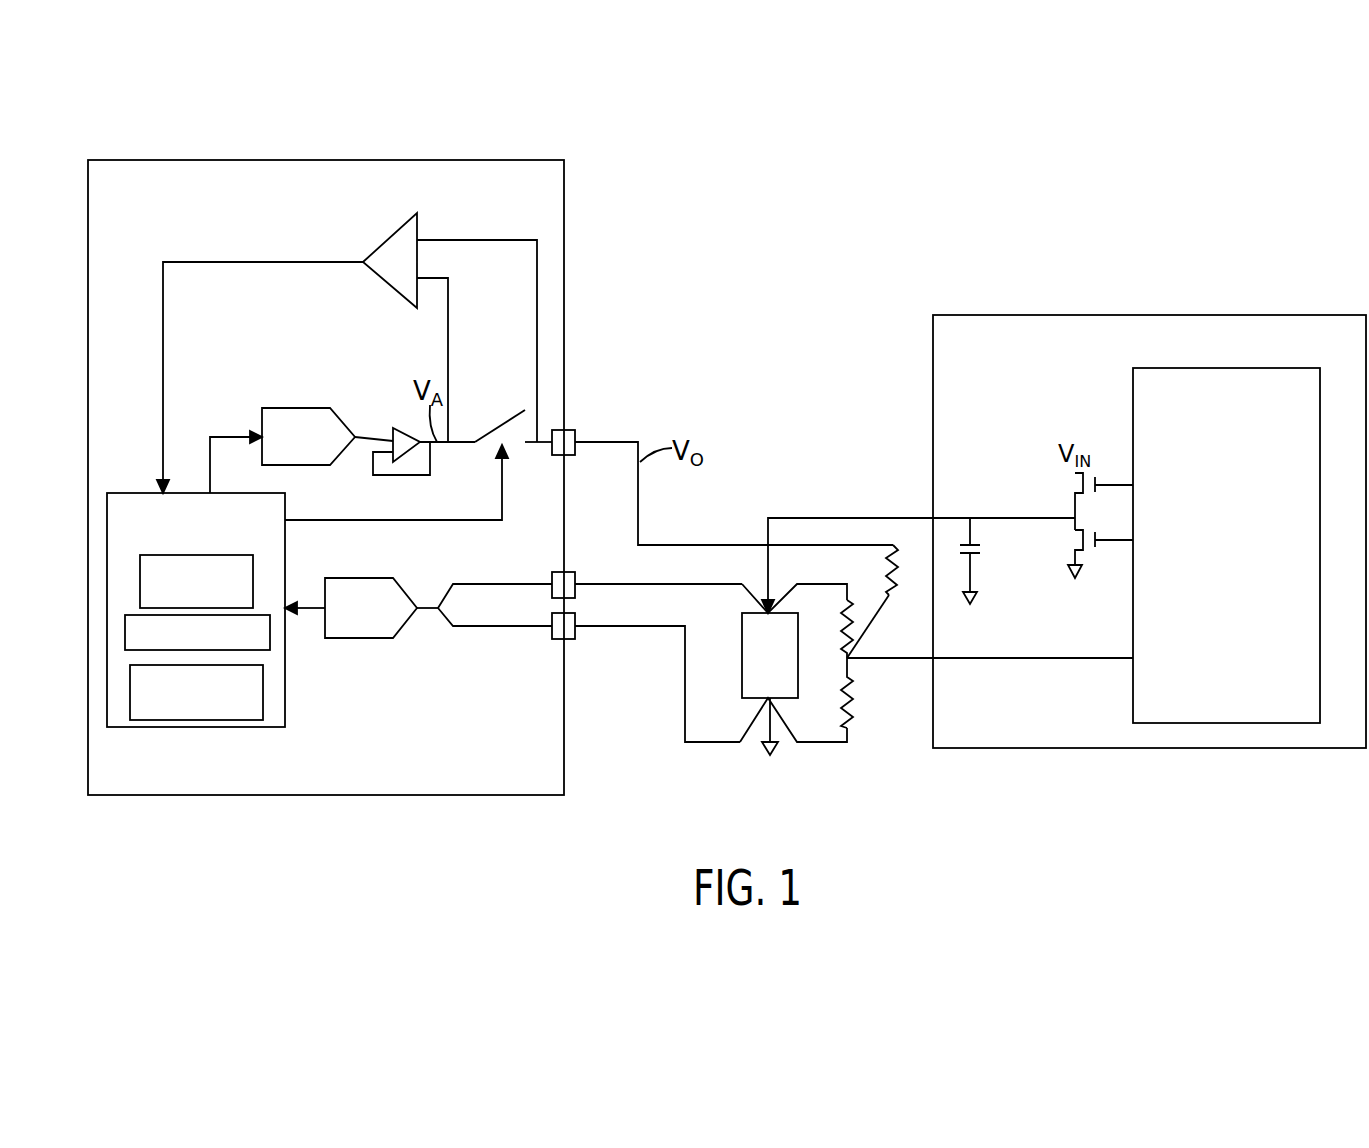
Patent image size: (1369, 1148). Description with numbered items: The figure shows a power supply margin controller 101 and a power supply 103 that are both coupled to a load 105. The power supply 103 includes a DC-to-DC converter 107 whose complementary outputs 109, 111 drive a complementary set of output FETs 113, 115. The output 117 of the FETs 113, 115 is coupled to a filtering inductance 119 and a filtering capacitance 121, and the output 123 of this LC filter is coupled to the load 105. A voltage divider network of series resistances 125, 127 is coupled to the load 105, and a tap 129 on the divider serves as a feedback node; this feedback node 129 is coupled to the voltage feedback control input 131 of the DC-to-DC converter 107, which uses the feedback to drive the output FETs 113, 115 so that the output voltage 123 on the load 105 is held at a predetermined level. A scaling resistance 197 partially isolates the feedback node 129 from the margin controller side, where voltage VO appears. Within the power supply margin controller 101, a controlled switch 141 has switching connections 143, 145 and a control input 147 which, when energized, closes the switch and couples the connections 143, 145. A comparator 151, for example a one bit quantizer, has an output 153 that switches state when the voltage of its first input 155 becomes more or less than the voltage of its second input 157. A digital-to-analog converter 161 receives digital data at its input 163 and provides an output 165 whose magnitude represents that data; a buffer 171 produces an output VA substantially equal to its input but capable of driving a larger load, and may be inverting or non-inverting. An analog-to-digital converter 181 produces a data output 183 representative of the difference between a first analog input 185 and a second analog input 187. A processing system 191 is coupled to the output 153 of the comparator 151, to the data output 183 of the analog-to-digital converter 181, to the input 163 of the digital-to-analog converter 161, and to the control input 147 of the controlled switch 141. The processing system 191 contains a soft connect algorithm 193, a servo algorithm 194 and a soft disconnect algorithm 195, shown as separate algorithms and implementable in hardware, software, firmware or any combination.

The power supply margin controller 101 is at (528, 160).
The power supply 103 is at (1003, 315).
The load 105 is at (742, 660).
The DC-to-DC converter 107 is at (1242, 562).
The complementary output 109 is at (1115, 483).
The complementary output 111 is at (1115, 543).
The output FET 113 is at (1075, 478).
The output FET 115 is at (1079, 546).
The output of the FETs 117 is at (1050, 518).
The filtering inductance 119 is at (1000, 518).
The filtering capacitance 121 is at (980, 548).
The output of the LC filter 123 is at (775, 518).
The resistance 125 is at (840, 630).
The resistance 127 is at (850, 700).
The tap 129 is at (855, 655).
The voltage feedback control input 131 is at (1110, 660).
The controlled switch 141 is at (520, 410).
The switching connection 143 is at (463, 442).
The switching connection 145 is at (540, 449).
The control input 147 is at (498, 487).
The comparator 151 is at (392, 234).
The output 153 is at (316, 265).
The first input 155 is at (433, 240).
The second input 157 is at (436, 268).
The digital-to-analog converter 161 is at (298, 407).
The input 163 is at (228, 436).
The output 165 is at (358, 445).
The buffer 171 is at (400, 476).
The analog-to-digital converter 181 is at (372, 640).
The data output 183 is at (312, 617).
The first analog input 185 is at (495, 586).
The second analog input 187 is at (470, 627).
The processing system 191 is at (107, 518).
The soft connect algorithm 193 is at (140, 580).
The servo algorithm 194 is at (125, 635).
The soft disconnect algorithm 195 is at (130, 698).
The scaling resistance 197 is at (895, 580).